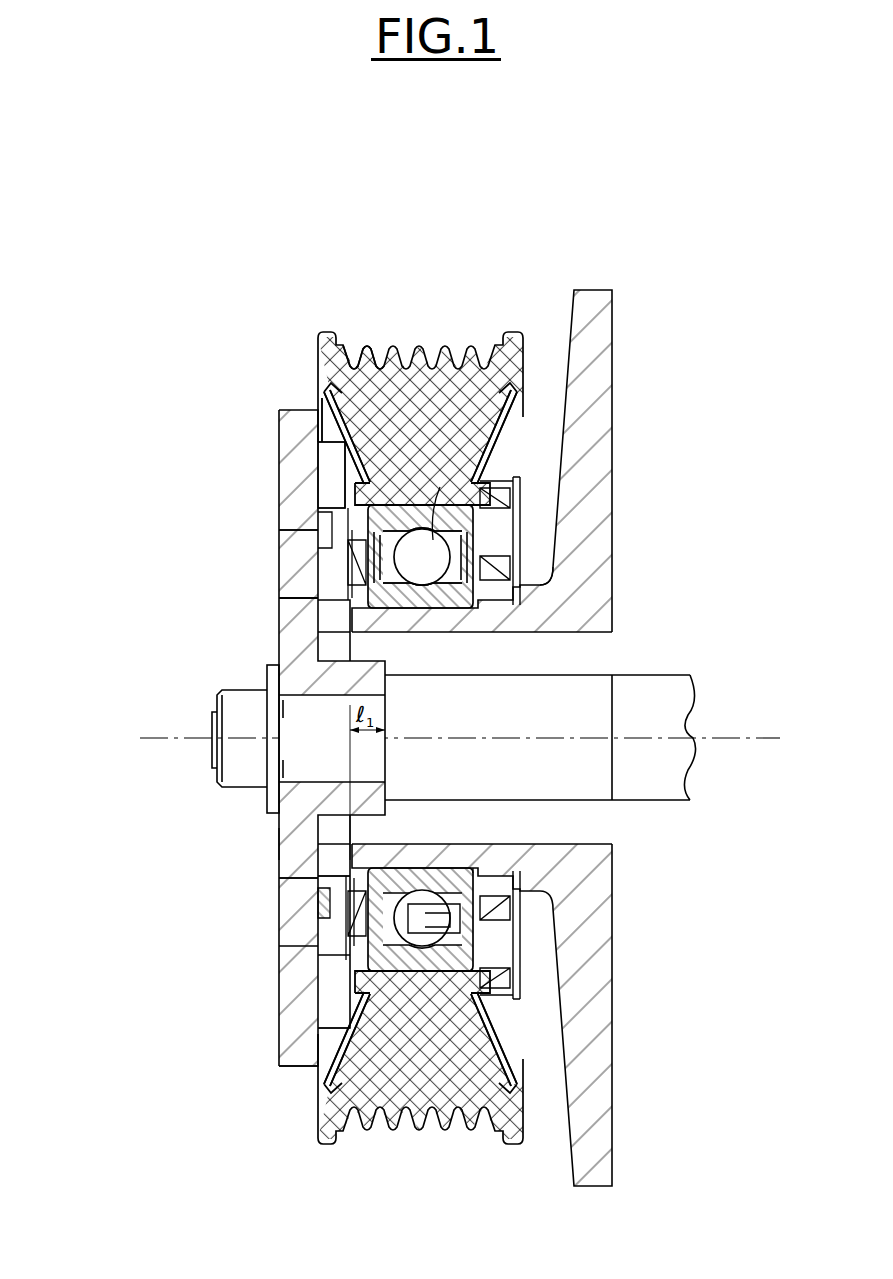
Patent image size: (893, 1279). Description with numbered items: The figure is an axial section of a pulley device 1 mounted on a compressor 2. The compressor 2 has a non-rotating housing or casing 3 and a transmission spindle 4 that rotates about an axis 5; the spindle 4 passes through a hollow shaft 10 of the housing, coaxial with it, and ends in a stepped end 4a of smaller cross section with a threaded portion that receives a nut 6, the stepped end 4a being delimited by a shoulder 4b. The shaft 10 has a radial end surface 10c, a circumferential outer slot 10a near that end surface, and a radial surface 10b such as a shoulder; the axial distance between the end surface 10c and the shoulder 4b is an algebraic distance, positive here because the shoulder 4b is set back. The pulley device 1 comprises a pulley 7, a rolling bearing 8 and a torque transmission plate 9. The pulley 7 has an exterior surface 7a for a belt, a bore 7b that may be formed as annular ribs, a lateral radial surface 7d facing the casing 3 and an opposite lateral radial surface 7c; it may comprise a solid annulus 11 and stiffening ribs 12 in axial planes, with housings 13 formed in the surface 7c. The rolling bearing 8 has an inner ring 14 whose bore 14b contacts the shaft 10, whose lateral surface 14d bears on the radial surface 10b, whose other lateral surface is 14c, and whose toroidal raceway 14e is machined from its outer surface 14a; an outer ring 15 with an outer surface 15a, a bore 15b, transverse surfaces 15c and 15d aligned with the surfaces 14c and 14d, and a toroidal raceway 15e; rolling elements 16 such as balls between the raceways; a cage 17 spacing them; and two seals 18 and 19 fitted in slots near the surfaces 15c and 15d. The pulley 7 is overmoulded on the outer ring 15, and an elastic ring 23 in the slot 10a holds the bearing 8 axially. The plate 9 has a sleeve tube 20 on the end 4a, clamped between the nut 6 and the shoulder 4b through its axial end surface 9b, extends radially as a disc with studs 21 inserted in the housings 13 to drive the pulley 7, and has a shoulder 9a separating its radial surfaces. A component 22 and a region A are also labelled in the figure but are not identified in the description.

The pulley device 1 is at (283, 303).
The compressor 2 is at (740, 367).
The housing or casing 3 is at (592, 297).
The transmission spindle 4 is at (668, 685).
The stepped end 4a is at (305, 778).
The shoulder 4b is at (282, 700).
The axis 5 is at (760, 736).
The nut 6 is at (218, 779).
The pulley 7 is at (472, 1105).
The exterior surface 7a is at (385, 345).
The bore 7b is at (350, 490).
The lateral radial surface 7c is at (337, 432).
The lateral radial surface 7d is at (518, 437).
The rolling bearing 8 is at (479, 868).
The torque transmission plate 9 is at (283, 1062).
The shoulder 9a is at (318, 905).
The axial end surface 9b is at (285, 835).
The hollow shaft of the housing 10 is at (520, 613).
The circumferential outer slot 10a is at (325, 592).
The radial surface 10b is at (350, 648).
The radial end surface 10c is at (300, 878).
The solid annulus 11 is at (325, 1100).
The stiffening ribs 12 is at (502, 1040).
The housings 13 is at (330, 1050).
The inner ring 14 is at (433, 893).
The outer surface 14a is at (378, 571).
The bore 14b is at (455, 600).
The lateral radial surface 14c is at (380, 590).
The lateral radial surface 14d is at (500, 600).
The raceway 14e is at (490, 578).
The outer ring 15 is at (345, 975).
The outer surface 15a is at (330, 398).
The bore 15b is at (352, 552).
The transverse radial surface 15c is at (358, 525).
The transverse radial surface 15d is at (520, 526).
The raceway 15e is at (440, 487).
The rolling elements 16 is at (410, 560).
The cage 17 is at (512, 935).
The seal 18 is at (498, 907).
The seal 19 is at (345, 960).
The sleeve tube 20 is at (355, 686).
The studs 21 is at (328, 457).
The hub band 22 is at (283, 551).
The elastic ring 23 is at (340, 940).
The region A is at (265, 838).